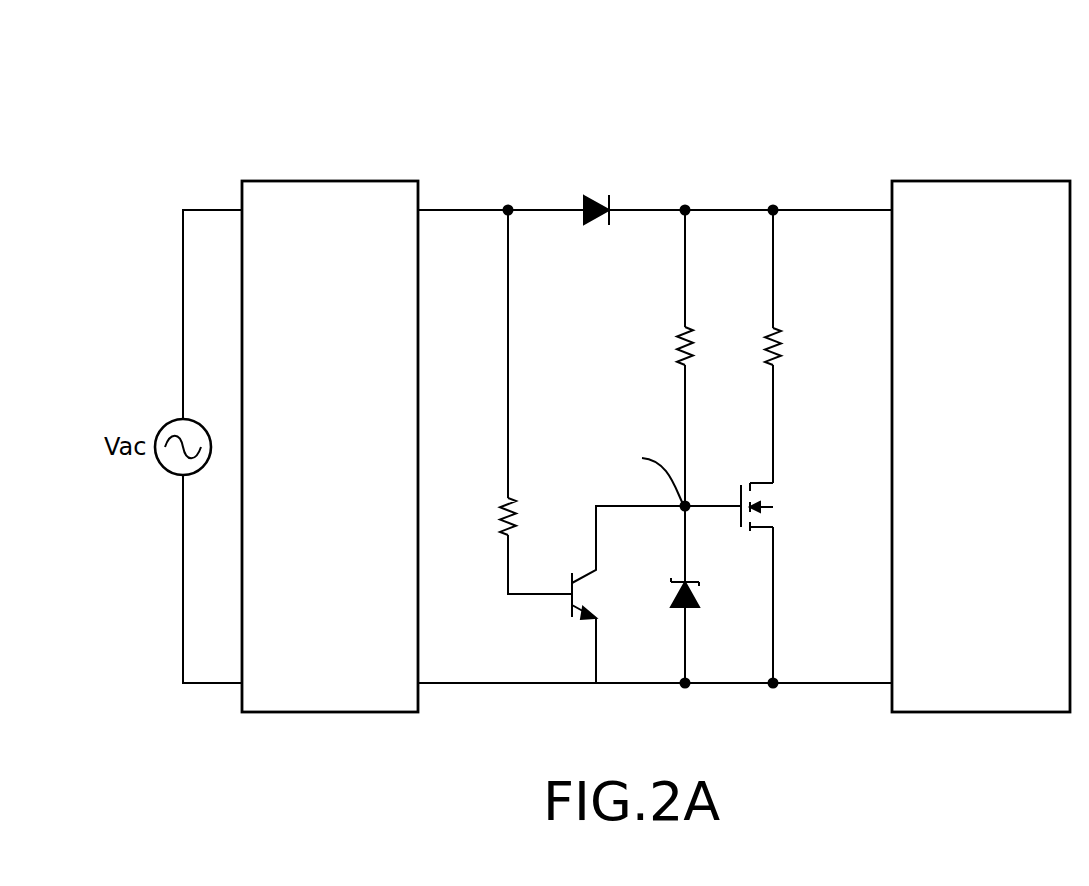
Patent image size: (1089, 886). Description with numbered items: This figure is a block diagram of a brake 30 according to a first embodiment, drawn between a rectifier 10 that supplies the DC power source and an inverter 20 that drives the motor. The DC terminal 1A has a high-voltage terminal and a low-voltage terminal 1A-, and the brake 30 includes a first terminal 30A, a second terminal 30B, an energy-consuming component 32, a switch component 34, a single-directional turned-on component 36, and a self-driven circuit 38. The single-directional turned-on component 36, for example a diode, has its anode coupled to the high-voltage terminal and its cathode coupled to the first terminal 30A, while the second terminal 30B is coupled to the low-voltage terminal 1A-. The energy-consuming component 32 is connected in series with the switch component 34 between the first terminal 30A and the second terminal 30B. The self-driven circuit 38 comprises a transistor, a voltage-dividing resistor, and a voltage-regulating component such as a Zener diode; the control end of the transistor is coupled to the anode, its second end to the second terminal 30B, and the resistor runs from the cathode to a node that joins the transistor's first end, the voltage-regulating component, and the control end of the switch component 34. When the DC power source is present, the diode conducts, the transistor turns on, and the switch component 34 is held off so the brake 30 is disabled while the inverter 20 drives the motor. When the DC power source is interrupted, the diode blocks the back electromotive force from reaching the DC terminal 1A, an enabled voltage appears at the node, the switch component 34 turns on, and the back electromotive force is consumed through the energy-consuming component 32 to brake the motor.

The rectifier 10 is at (330, 188).
The inverter 20 is at (980, 187).
The brake 30 is at (852, 99).
The first terminal 30A is at (776, 196).
The second terminal 30B is at (776, 697).
The energy-consuming component 32 is at (786, 337).
The switch component 34 is at (780, 493).
The single-directional turned-on component 36 is at (600, 194).
The self-driven circuit 38 is at (610, 383).
The DC terminal 1A is at (430, 173).
The low-voltage terminal 1A- is at (478, 684).